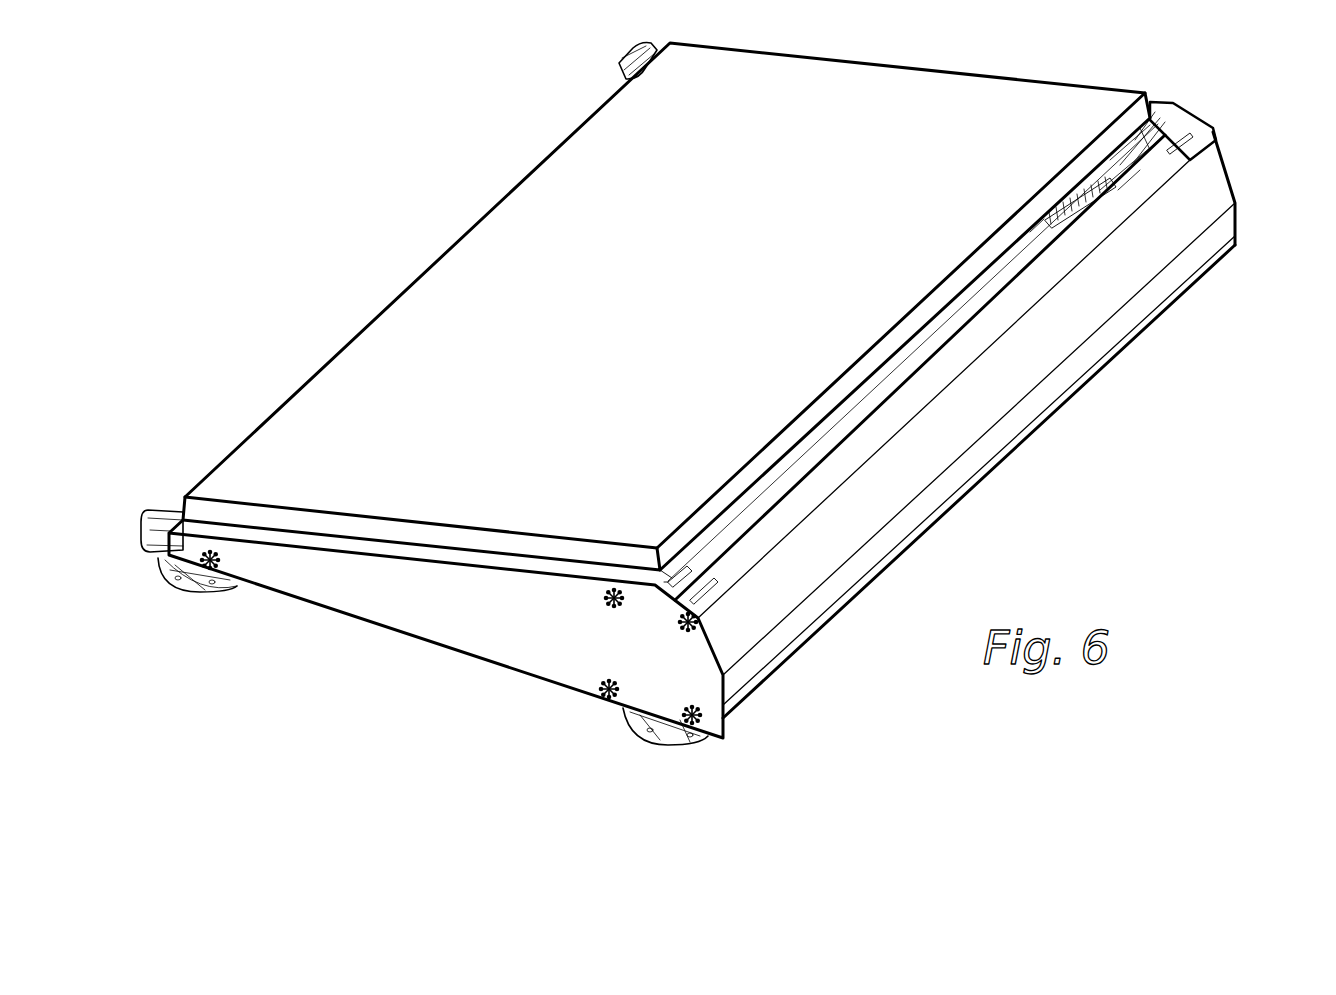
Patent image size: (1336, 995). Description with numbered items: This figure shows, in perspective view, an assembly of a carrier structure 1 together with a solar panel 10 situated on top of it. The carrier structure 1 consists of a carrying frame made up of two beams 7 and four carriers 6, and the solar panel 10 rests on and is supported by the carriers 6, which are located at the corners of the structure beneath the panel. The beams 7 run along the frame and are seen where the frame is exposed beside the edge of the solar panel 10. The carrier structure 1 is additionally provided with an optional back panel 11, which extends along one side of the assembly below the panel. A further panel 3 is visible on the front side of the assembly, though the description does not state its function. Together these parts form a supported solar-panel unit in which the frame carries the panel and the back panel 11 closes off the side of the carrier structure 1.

The carrier structure 1 is at (1269, 90).
The front panel 3 is at (446, 610).
The carriers 6 is at (621, 62).
The beams 7 is at (1063, 207).
The solar panel 10 is at (505, 262).
The back panel 11 is at (988, 448).